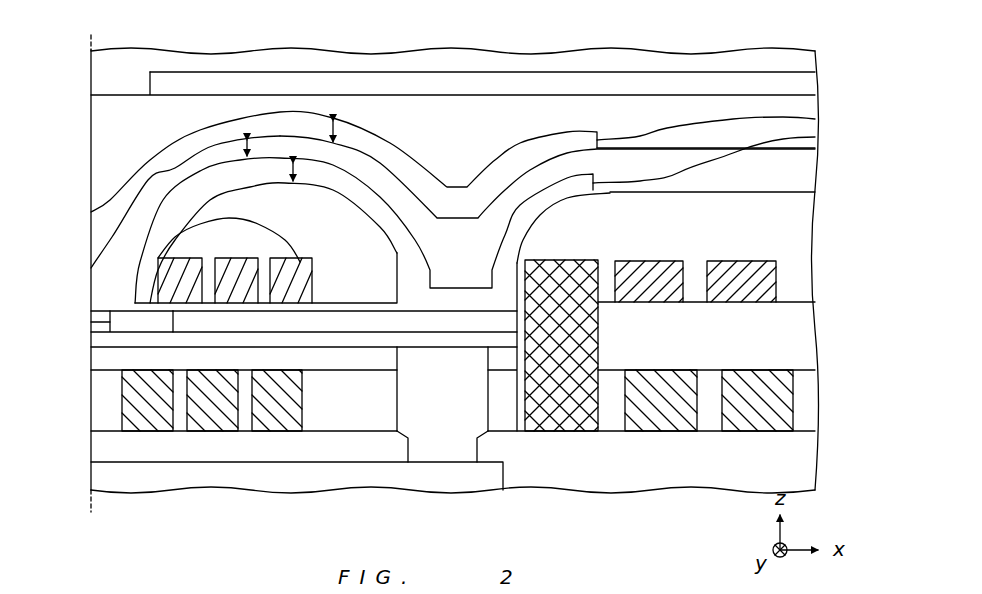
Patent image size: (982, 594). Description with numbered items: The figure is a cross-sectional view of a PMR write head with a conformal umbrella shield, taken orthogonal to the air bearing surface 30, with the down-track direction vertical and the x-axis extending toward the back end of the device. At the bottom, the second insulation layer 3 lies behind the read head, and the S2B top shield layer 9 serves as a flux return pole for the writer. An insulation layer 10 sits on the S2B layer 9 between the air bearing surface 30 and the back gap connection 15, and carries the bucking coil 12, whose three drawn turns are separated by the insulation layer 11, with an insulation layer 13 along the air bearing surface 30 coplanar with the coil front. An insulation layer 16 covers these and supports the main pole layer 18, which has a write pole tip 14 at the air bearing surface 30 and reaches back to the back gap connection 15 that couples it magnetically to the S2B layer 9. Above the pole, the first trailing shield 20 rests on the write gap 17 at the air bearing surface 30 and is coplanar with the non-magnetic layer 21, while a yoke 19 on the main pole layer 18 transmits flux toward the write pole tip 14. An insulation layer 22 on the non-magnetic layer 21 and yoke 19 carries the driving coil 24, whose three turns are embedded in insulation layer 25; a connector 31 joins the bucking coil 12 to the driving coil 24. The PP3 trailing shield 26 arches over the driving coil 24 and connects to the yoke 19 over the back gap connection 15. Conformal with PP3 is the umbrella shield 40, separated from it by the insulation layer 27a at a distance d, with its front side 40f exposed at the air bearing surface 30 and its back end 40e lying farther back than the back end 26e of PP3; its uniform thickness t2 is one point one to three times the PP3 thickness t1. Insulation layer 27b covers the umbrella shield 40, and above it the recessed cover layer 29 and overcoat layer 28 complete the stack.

The second insulation layer 3 is at (805, 457).
The second top shield (S2B) layer 9 is at (100, 477).
The insulation layer 10 is at (100, 450).
The insulation layer 11 is at (110, 432).
The bucking coil 12 is at (273, 390).
The insulation layer 13 is at (100, 385).
The write pole tip 14 is at (100, 343).
The back gap connection 15 is at (455, 450).
The insulation layer 16 is at (100, 365).
The write gap 17 is at (123, 322).
The main pole layer 18 is at (343, 338).
The yoke 19 is at (380, 325).
The first write shield layer 20 is at (123, 313).
The non-magnetic layer 21 is at (125, 305).
The insulation layer 22 is at (135, 300).
The driving coil 24 is at (250, 268).
The insulation layer 25 is at (150, 280).
The PP3 trailing shield layer 26 is at (167, 222).
The back end of PP3 26e is at (815, 137).
The insulation layer 27a is at (800, 168).
The insulation layer 27b is at (100, 124).
The overcoat layer 28 is at (100, 83).
The cover layer 29 is at (800, 85).
The air bearing surface 30 is at (91, 35).
The connector 31 is at (570, 265).
The umbrella shield (UmS) 40 is at (145, 183).
The back end of umbrella shield 40e is at (815, 119).
The front side of umbrella shield 40f is at (91, 233).
The separation distance d is at (237, 152).
The thickness of PP3 t1 is at (290, 166).
The thickness of umbrella shield t2 is at (333, 131).